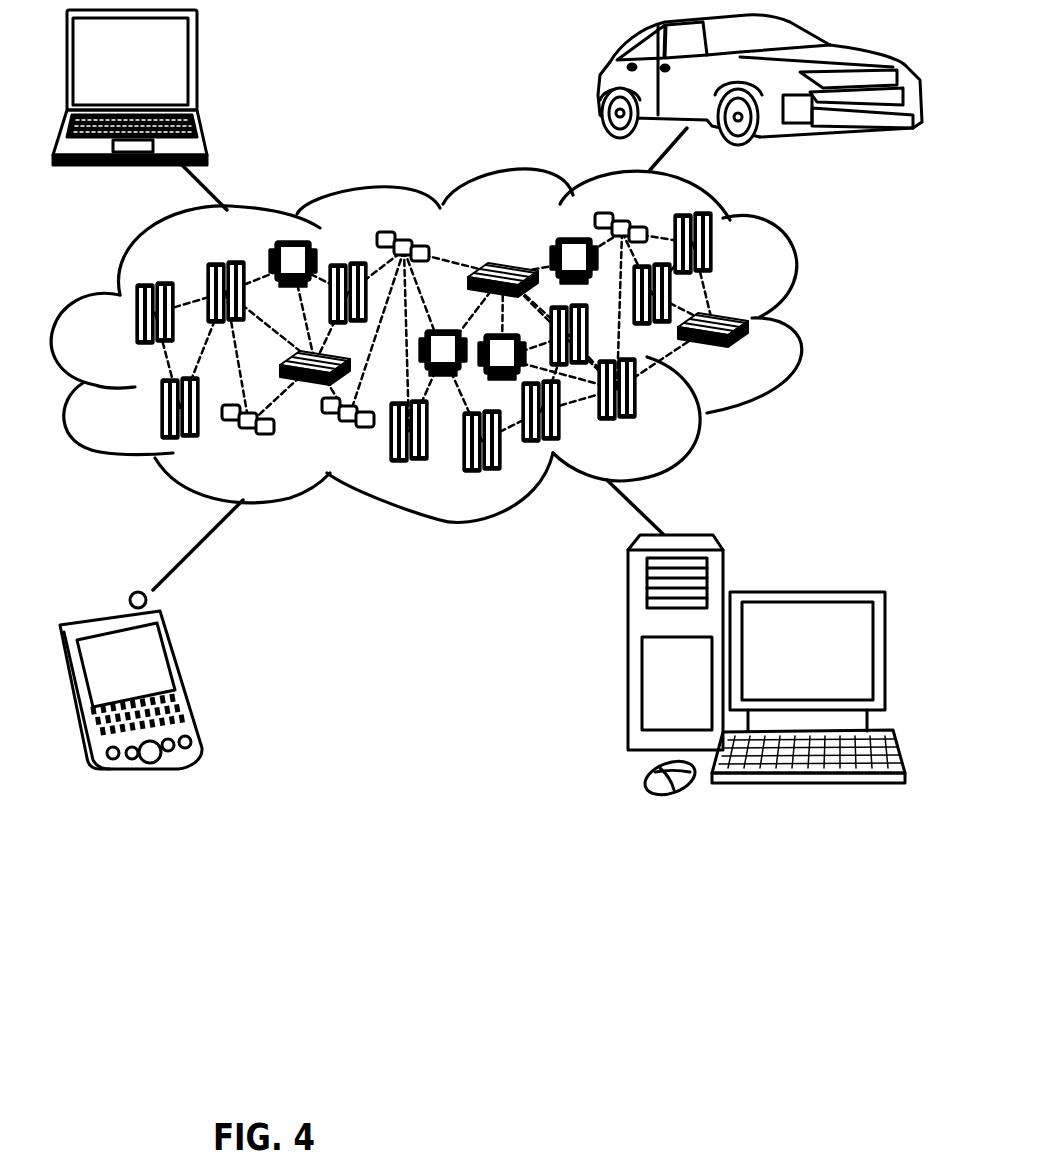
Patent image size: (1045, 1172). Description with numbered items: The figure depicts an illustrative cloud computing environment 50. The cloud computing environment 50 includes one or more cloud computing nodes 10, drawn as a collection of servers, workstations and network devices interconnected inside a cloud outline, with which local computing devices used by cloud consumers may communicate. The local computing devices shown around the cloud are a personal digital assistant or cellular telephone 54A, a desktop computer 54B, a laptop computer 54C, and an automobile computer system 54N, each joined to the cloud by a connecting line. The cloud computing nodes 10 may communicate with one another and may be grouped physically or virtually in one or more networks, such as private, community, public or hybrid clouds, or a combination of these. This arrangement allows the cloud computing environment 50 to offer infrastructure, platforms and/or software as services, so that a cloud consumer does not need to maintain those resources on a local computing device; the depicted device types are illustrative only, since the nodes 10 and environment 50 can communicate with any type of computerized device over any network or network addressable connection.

The cloud computing nodes 10 is at (758, 357).
The cloud computing environment 50 is at (807, 321).
The personal digital assistant or cellular telephone 54A is at (185, 672).
The desktop computer 54B is at (805, 592).
The laptop computer 54C is at (197, 68).
The automobile computer system 54N is at (602, 82).